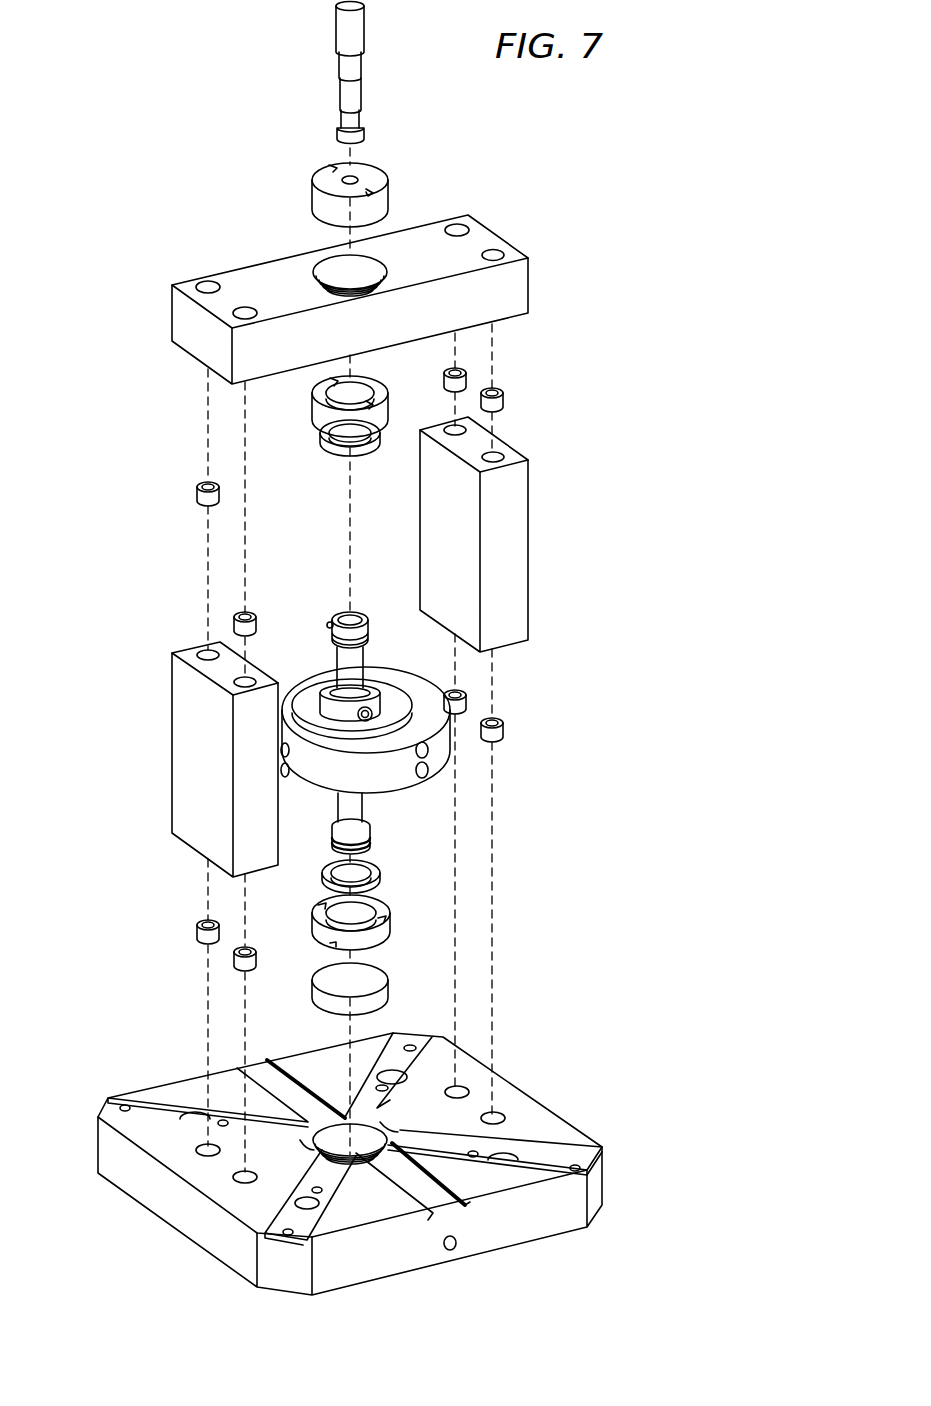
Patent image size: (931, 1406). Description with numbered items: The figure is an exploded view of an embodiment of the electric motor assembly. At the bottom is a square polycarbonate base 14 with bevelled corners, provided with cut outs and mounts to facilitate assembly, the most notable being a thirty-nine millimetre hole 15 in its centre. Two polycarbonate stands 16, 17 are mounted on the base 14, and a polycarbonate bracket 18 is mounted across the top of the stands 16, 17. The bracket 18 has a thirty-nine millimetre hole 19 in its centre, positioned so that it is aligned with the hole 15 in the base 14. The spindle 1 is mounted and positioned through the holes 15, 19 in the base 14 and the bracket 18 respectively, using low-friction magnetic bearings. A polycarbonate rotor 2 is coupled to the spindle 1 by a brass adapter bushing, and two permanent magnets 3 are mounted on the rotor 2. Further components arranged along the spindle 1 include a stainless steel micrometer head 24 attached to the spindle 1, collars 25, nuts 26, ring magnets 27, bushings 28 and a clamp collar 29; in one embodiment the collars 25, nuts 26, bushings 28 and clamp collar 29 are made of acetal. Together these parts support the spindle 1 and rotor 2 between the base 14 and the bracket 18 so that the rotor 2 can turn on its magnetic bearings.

The spindle 1 is at (340, 613).
The rotor 2 is at (453, 745).
The permanent magnets 3 is at (437, 757).
The polycarbonate base 14 is at (97, 1150).
The hole 15 is at (377, 1105).
The polycarbonate stand 16 is at (530, 505).
The polycarbonate stand 17 is at (172, 708).
The polycarbonate bracket 18 is at (528, 280).
The hole 19 is at (399, 239).
The micrometer head 24 is at (365, 32).
The collars 25 is at (387, 700).
The nuts 26 is at (312, 192).
The ring magnets 27 is at (327, 452).
The bushings 28 is at (507, 408).
The clamp collar 29 is at (327, 624).